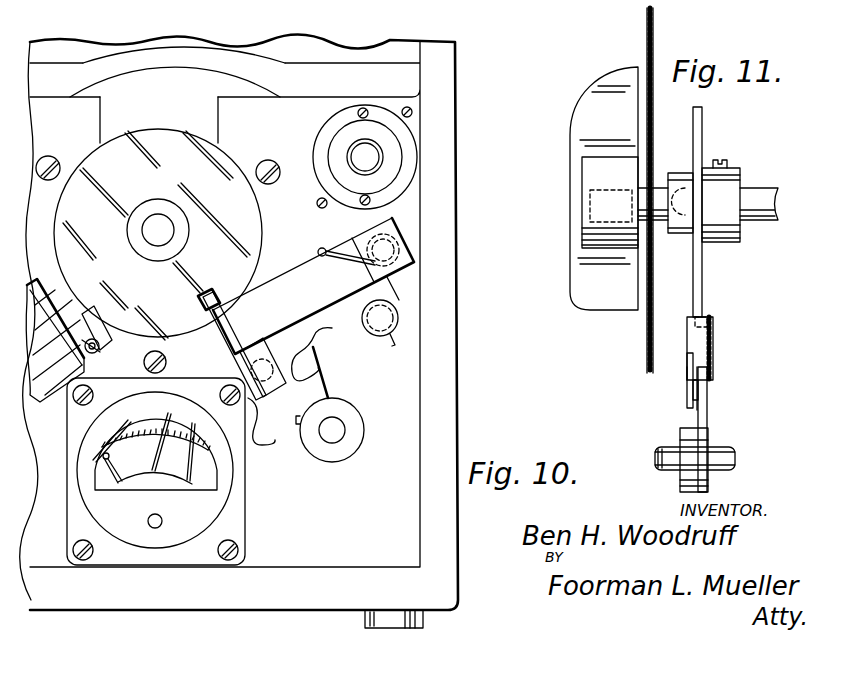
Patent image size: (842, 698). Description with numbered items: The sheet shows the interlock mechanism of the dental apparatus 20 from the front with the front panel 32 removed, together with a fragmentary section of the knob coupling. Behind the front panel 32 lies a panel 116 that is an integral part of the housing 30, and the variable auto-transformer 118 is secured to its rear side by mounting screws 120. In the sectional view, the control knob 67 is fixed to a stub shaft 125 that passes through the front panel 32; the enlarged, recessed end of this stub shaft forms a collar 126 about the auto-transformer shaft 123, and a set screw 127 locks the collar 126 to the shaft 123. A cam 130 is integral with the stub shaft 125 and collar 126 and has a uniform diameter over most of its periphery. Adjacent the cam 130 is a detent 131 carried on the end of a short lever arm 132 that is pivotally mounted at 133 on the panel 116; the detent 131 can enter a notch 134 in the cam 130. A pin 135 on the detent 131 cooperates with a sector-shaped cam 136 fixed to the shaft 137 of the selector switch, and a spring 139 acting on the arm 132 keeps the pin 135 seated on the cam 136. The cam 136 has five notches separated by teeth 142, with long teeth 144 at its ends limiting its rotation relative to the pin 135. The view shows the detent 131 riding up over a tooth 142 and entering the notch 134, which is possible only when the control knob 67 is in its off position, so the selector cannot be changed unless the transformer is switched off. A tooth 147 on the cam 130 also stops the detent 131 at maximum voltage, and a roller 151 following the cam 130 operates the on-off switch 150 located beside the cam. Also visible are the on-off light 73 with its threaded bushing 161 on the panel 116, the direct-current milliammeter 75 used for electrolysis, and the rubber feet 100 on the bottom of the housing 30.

In FIG. 10, the apparatus 20 is at (463, 412).
In FIG. 10, the housing 30 is at (452, 323).
In FIG. 11, the front panel 32 is at (645, 30).
In FIG. 11, the knob 67 is at (593, 90).
In FIG. 10, the on-off light 73 is at (360, 145).
In FIG. 10, the direct-current milliammeter 75 is at (72, 524).
In FIG. 10, the rubber feet 100 is at (370, 615).
In FIG. 10, the panel 116 is at (405, 375).
In FIG. 10, the variable auto-transformer 118 is at (159, 120).
In FIG. 10, the mounting screws 120 is at (52, 157).
In FIG. 11, the shaft 123 is at (760, 190).
In FIG. 10, the stub shaft 125 is at (159, 216).
In FIG. 11, the stub shaft 125 is at (658, 188).
In FIG. 11, the collar 126 is at (730, 242).
In FIG. 11, the set screw 127 is at (718, 160).
In FIG. 10, the cam 130 is at (256, 200).
In FIG. 11, the cam 130 is at (702, 290).
In FIG. 10, the detent 131 is at (212, 315).
In FIG. 11, the detent 131 is at (688, 343).
In FIG. 10, the lever arm 132 is at (285, 280).
In FIG. 11, the lever arm 132 is at (713, 353).
In FIG. 10, the pivot 133 is at (395, 250).
In FIG. 10, the notch 134 is at (209, 293).
In FIG. 10, the pin 135 is at (265, 338).
In FIG. 11, the pin 135 is at (690, 387).
In FIG. 10, the sector-shaped cam 136 is at (338, 398).
In FIG. 11, the sector-shaped cam 136 is at (707, 422).
In FIG. 10, the shaft 137 is at (338, 444).
In FIG. 11, the shaft 137 is at (730, 455).
In FIG. 10, the spring 139 is at (398, 288).
In FIG. 10, the teeth 142 is at (332, 372).
In FIG. 10, the long teeth 144 is at (316, 345).
In FIG. 10, the tooth 147 is at (97, 333).
In FIG. 10, the switch 150 is at (55, 340).
In FIG. 10, the roller 151 is at (108, 332).
In FIG. 10, the bushings 161 is at (408, 166).